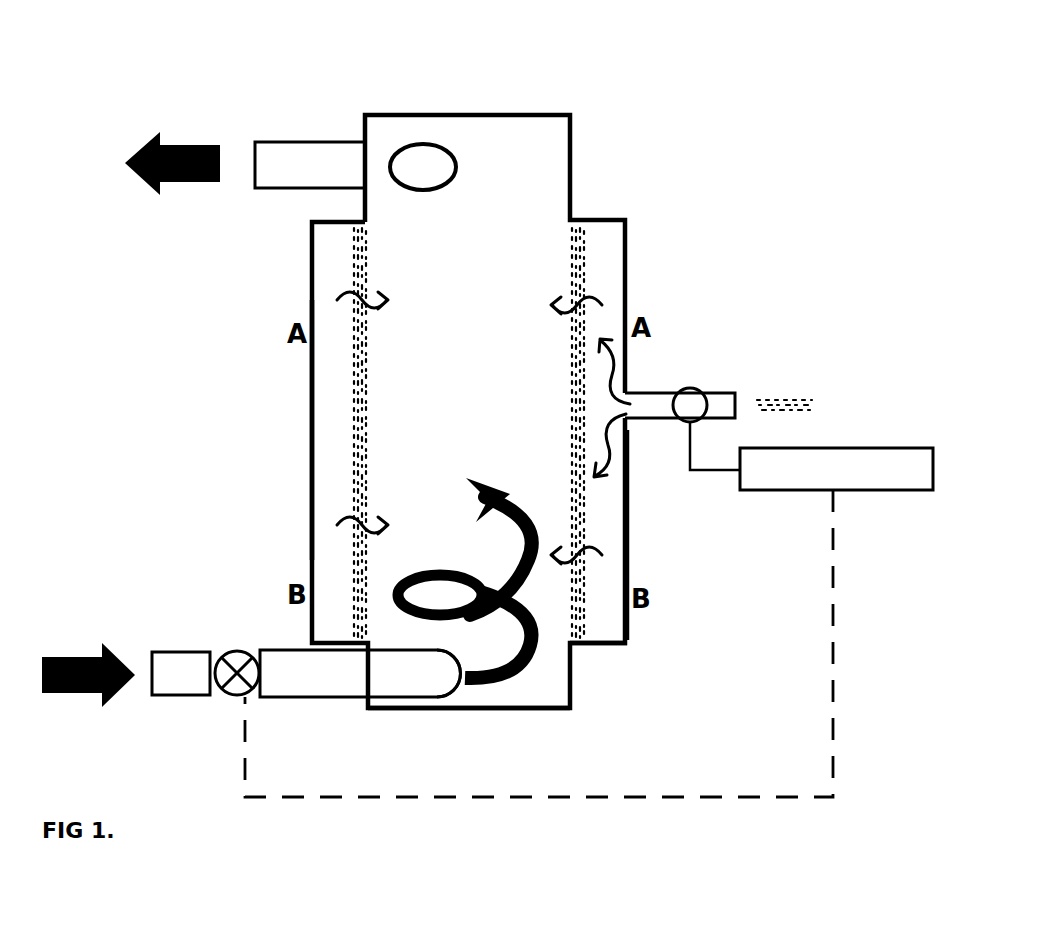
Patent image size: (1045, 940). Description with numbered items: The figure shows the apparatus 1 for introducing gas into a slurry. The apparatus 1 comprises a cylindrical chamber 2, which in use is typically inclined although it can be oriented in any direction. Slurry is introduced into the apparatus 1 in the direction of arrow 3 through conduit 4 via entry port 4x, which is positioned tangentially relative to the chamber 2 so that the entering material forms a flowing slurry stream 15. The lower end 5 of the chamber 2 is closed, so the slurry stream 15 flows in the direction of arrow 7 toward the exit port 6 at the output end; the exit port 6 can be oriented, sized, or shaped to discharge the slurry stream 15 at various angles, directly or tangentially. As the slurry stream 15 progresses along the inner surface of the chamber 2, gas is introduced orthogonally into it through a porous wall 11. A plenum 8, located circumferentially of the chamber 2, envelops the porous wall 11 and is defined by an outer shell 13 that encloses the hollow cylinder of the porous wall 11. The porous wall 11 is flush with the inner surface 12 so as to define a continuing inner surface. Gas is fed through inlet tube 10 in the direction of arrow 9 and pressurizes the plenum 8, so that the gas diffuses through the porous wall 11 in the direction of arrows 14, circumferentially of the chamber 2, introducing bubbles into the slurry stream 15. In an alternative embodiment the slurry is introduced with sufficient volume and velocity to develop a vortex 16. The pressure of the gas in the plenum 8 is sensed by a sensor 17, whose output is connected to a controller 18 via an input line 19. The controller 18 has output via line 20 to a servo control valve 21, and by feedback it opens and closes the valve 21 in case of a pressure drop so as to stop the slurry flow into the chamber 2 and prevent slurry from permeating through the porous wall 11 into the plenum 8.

The apparatus 1 is at (413, 115).
The cylindrical chamber 2 is at (487, 135).
The arrow 3 is at (89, 655).
The conduit 4 is at (313, 690).
The entry port 4x is at (445, 680).
The lower end 5 is at (527, 710).
The exit port 6 is at (300, 150).
The arrow 7 is at (178, 148).
The plenum 8 is at (605, 240).
The arrow 9 is at (818, 400).
The inlet tube 10 is at (730, 393).
The porous wall 11 is at (578, 270).
The inner surface 12 is at (573, 647).
The outer shell 13 is at (627, 528).
The arrows 14 is at (580, 292).
The slurry stream 15 is at (518, 668).
The vortex 16 is at (415, 585).
The sensor 17 is at (690, 388).
The controller 18 is at (890, 490).
The input line 19 is at (699, 459).
The line 20 is at (713, 798).
The servo control valve 21 is at (228, 693).